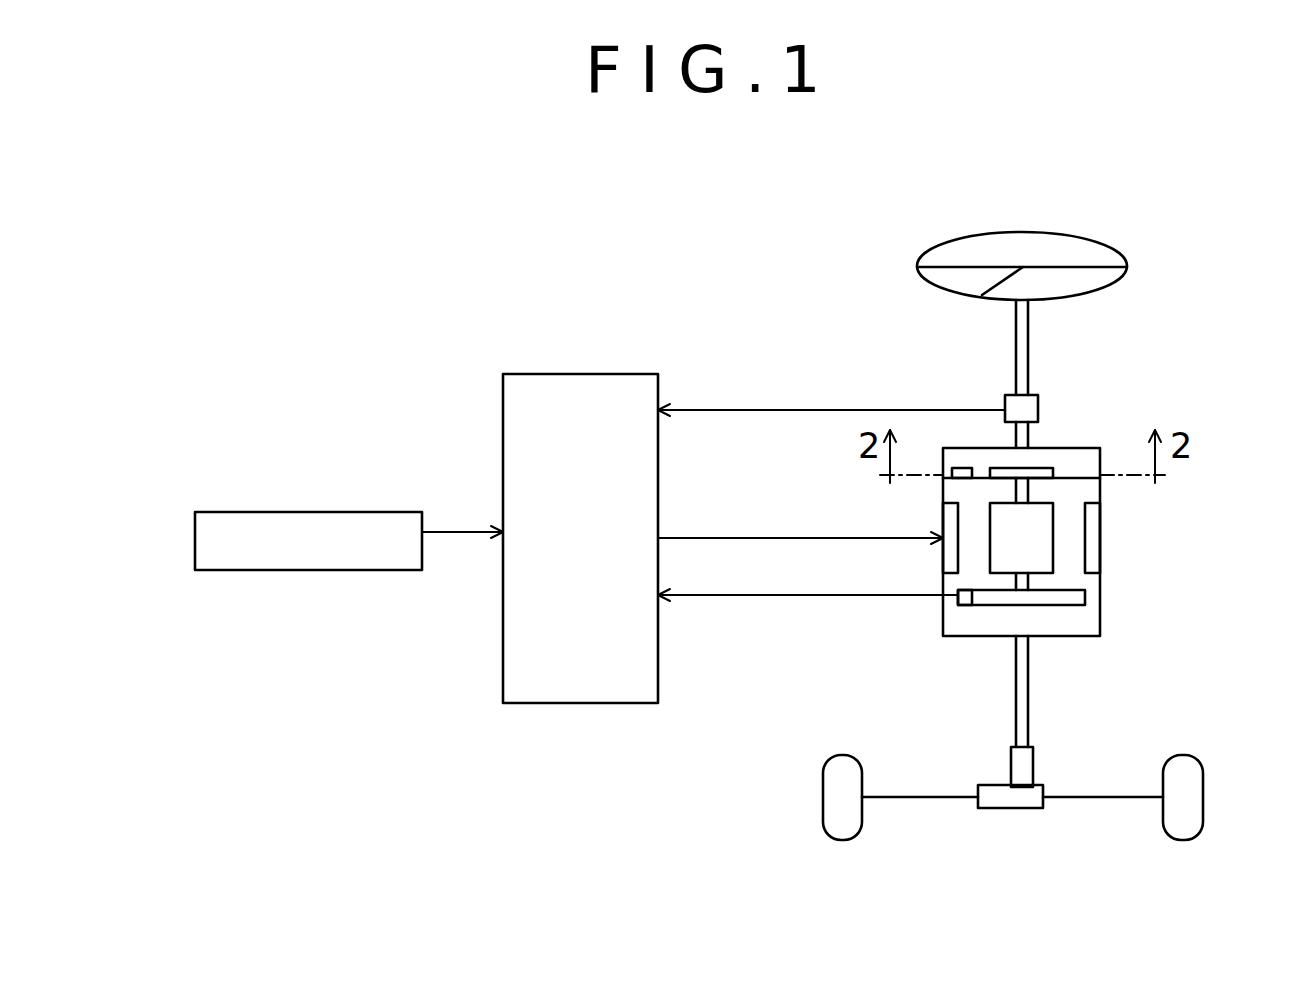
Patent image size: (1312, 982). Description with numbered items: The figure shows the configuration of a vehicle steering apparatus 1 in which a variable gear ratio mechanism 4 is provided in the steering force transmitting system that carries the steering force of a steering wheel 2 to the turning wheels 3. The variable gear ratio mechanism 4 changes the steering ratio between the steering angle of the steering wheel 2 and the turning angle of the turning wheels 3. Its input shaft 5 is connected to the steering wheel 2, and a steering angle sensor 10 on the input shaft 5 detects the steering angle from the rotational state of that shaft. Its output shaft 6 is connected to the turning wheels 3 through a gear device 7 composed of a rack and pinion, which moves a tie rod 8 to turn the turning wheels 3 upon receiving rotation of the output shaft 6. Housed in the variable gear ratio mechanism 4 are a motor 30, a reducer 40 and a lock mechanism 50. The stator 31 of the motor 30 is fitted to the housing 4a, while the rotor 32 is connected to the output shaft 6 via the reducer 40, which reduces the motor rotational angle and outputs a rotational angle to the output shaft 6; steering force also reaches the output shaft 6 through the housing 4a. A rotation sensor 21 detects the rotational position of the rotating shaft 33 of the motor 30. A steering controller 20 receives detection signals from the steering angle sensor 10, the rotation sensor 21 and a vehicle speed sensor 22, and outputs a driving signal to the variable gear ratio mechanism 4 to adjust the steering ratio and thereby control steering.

The vehicle steering apparatus 1 is at (730, 268).
The steering wheel 2 is at (1083, 236).
The turning wheels 3 is at (843, 840).
The variable gear ratio mechanism 4 is at (1106, 445).
The housing 4a is at (1098, 596).
The input shaft 5 is at (1028, 340).
The output shaft 6 is at (1030, 702).
The gear device 7 is at (1022, 808).
The tie rod 8 is at (1115, 797).
The steering angle sensor 10 is at (1005, 395).
The steering controller 20 is at (570, 374).
The rotation sensor 21 is at (958, 600).
The vehicle speed sensor 22 is at (305, 512).
The motor 30 is at (1110, 556).
The stator 31 is at (1092, 525).
The rotor 32 is at (1042, 543).
The rotating shaft 33 is at (1022, 581).
The reducer 40 is at (976, 626).
The lock mechanism 50 is at (1003, 462).